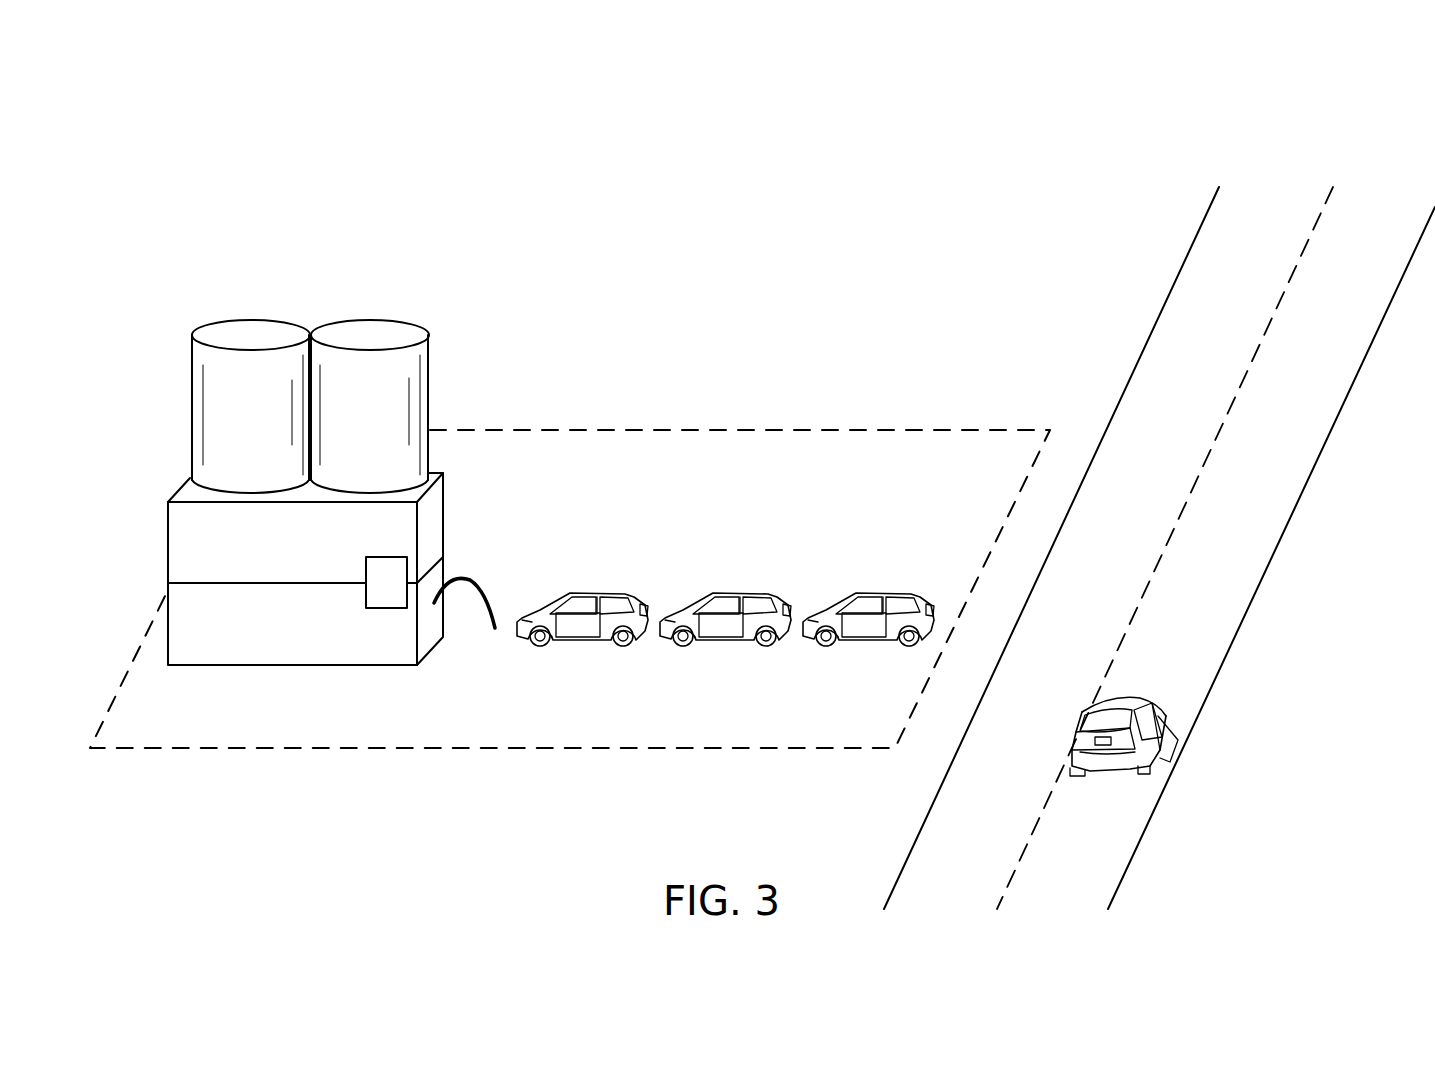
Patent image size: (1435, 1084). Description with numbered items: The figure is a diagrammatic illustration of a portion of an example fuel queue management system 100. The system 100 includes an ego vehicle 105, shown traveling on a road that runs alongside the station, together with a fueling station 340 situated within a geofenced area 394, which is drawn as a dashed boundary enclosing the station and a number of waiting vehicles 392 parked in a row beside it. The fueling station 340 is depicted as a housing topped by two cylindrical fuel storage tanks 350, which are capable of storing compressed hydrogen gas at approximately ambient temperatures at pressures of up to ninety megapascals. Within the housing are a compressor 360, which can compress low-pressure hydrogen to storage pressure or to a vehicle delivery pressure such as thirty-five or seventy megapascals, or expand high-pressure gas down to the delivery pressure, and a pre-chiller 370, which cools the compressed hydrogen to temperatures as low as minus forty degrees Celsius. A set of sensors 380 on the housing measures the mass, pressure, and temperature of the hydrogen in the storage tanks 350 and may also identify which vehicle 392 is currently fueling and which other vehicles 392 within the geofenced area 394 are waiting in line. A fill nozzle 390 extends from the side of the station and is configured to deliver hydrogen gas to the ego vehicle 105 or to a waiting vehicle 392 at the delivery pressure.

The fuel queue management system 100 is at (928, 140).
The ego vehicle 105 is at (1134, 697).
The fueling station 340 is at (270, 211).
The fuel storage tanks 350 is at (250, 337).
The compressor 360 is at (176, 542).
The pre-chiller 370 is at (232, 658).
The sensors 380 is at (368, 596).
The fill nozzle 390 is at (481, 581).
The waiting vehicles 392 is at (600, 595).
The geofenced area 394 is at (743, 418).